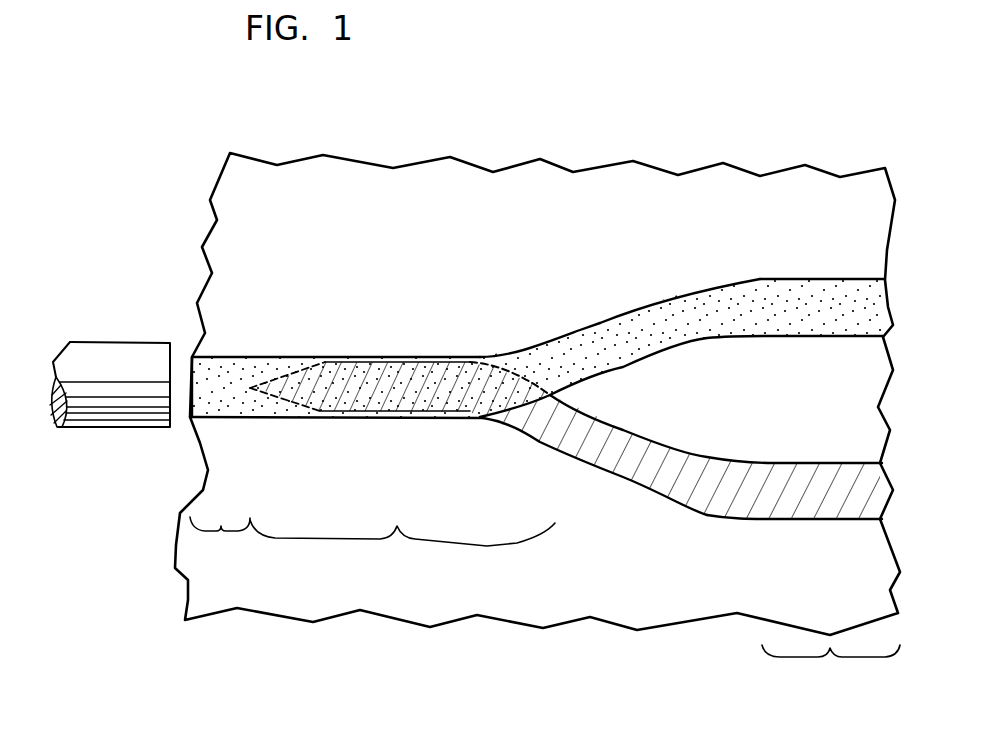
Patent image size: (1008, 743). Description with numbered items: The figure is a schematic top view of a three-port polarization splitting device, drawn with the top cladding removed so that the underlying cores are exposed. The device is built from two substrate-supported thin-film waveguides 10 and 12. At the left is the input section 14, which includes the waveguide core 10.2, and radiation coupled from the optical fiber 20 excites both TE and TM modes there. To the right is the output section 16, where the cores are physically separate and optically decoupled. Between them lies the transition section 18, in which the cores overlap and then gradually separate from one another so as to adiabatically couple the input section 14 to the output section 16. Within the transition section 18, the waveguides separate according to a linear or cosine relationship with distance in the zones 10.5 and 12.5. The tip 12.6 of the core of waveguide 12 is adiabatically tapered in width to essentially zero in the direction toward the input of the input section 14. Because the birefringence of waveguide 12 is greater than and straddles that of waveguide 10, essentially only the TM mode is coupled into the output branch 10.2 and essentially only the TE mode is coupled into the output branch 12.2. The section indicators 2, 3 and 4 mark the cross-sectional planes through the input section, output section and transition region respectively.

The thin-film waveguide 10 is at (578, 331).
The waveguide core / output branch 10.2 is at (756, 279).
The zone of waveguide 10 10.5 is at (520, 352).
The thin-film waveguide 12 is at (676, 422).
The output branch 12.2 is at (747, 520).
The zone of waveguide 12 12.5 is at (517, 373).
The tip of the core of waveguide 12 12.6 is at (264, 386).
The input section 14 is at (220, 545).
The output section 16 is at (831, 664).
The transition section 18 is at (402, 551).
The optical fiber 20 is at (140, 342).
The section line 2- 2 is at (227, 345).
The section line 3- 3 is at (838, 458).
The section line 4- 4 is at (423, 345).